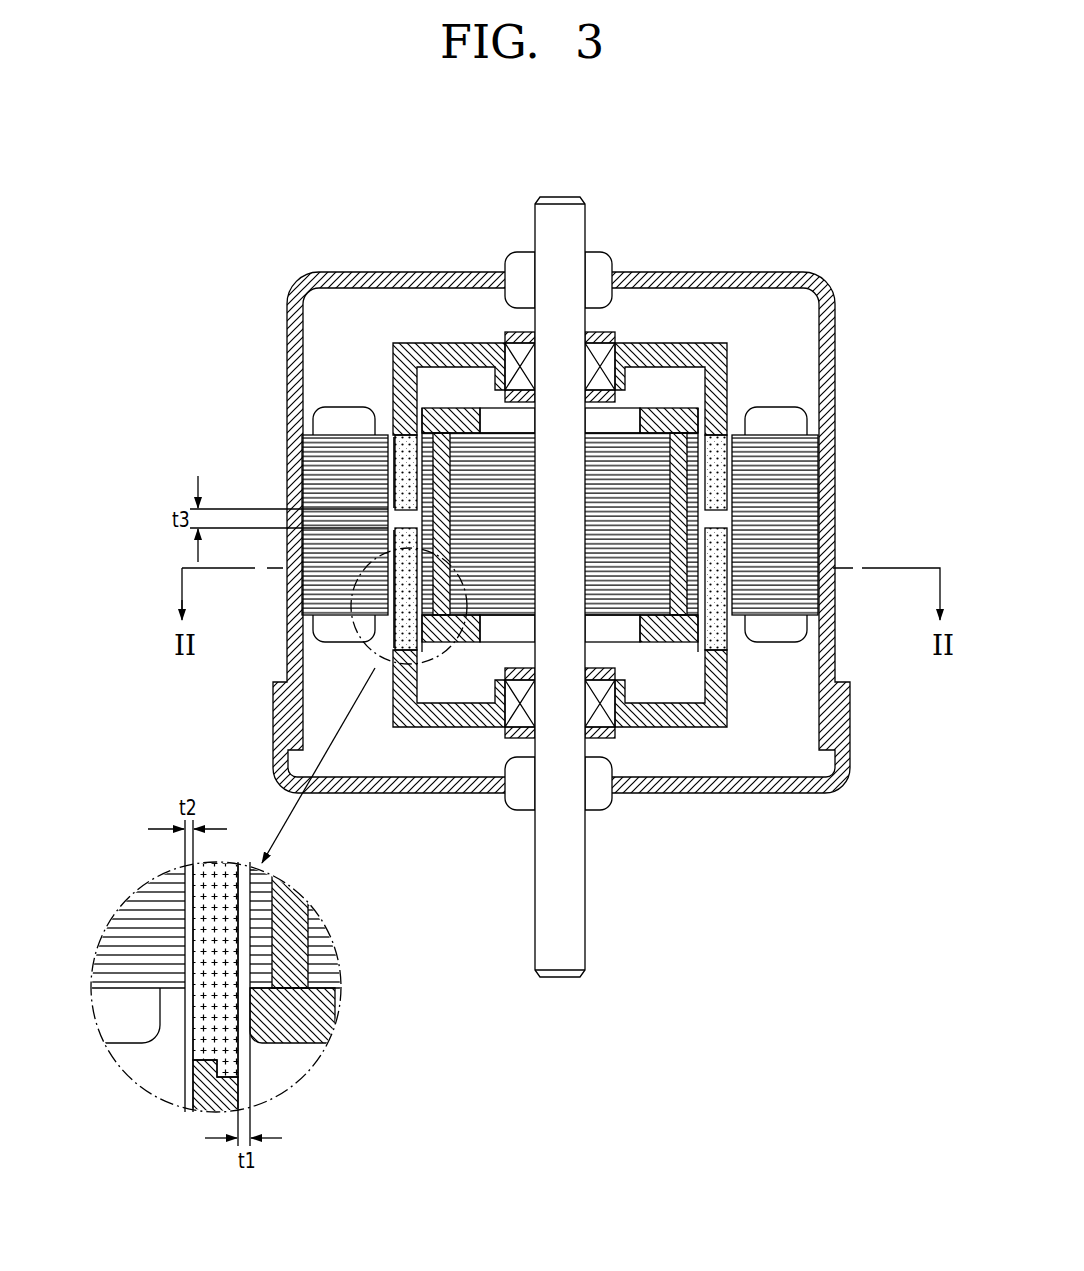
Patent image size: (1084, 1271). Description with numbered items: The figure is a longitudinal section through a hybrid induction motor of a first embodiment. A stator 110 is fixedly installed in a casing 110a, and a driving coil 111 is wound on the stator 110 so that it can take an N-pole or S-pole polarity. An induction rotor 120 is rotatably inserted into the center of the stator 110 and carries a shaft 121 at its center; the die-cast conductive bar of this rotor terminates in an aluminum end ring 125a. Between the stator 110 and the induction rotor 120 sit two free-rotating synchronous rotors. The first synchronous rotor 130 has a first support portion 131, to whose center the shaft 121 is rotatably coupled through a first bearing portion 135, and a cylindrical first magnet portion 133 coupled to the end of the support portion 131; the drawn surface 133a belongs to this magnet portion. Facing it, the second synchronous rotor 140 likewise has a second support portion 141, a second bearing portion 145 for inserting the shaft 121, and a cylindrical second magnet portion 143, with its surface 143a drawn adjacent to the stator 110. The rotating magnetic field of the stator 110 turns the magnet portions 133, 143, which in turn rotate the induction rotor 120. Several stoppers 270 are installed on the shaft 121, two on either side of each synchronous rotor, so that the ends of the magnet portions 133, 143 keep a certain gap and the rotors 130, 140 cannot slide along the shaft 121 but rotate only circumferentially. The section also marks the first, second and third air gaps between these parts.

The stator 110 is at (760, 505).
The casing 110a is at (828, 352).
The driving coil 111 is at (778, 420).
The induction rotor 120 is at (667, 432).
The shaft 121 is at (565, 925).
The end ring 125a is at (670, 405).
The first synchronous rotor 130 is at (576, 752).
The first support portion 131 is at (680, 716).
The first magnet portion 133 is at (565, 587).
The lower plate surface 133a is at (390, 543).
The first bearing portion 135 is at (596, 722).
The second synchronous rotor 140 is at (610, 323).
The second support portion 141 is at (715, 357).
The second magnet portion 143 is at (565, 472).
The upper plate surface 143a is at (390, 480).
The second bearing portion 145 is at (597, 345).
The stopper 270 is at (518, 398).